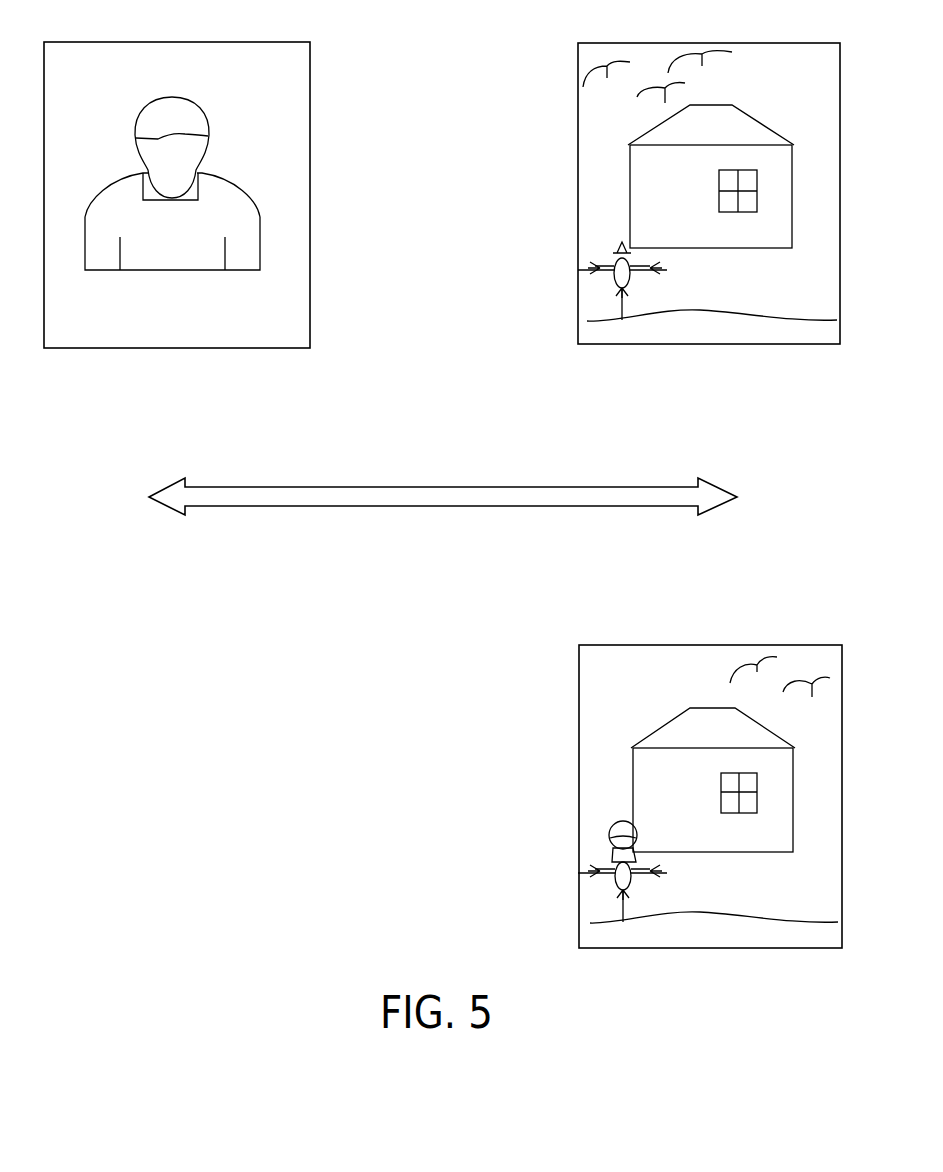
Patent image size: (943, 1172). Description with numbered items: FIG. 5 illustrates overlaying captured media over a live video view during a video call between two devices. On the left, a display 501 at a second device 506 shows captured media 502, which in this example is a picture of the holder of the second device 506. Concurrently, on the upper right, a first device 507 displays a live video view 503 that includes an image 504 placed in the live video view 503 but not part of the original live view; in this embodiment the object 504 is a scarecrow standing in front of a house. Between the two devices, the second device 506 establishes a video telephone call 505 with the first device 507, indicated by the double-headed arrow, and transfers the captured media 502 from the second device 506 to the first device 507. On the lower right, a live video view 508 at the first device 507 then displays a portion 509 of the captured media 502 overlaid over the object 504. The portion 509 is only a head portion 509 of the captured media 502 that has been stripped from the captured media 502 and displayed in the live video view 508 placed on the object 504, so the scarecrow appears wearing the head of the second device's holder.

The display 501 is at (311, 115).
The captured media 502 is at (242, 185).
The live video view 503 is at (578, 113).
The image 504 is at (613, 280).
The video telephone call 505 is at (445, 447).
The second device 506 is at (74, 480).
The first device 507 is at (786, 478).
The live video view 508 is at (579, 698).
The portion of the captured media 509 is at (609, 834).